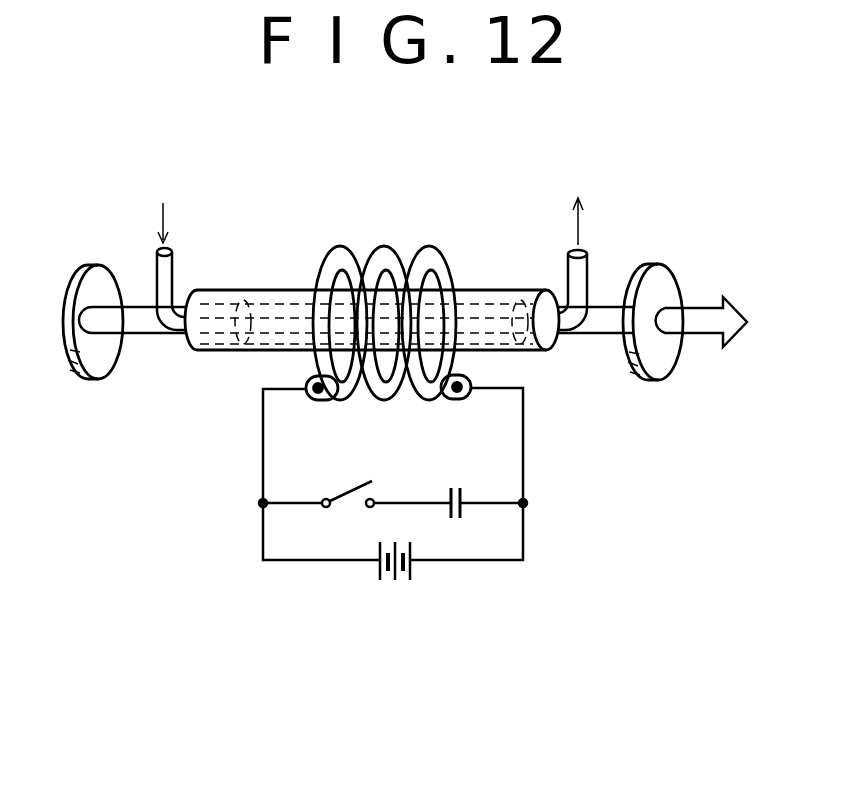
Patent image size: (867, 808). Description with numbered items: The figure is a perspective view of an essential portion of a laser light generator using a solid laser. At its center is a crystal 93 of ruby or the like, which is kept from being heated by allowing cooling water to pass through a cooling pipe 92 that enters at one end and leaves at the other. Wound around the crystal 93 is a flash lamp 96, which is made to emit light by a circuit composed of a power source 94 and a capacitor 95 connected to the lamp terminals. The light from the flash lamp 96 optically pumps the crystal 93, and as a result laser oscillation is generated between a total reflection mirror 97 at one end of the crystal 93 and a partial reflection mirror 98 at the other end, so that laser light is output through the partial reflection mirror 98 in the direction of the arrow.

The cooling pipe 92 is at (173, 268).
The crystal 93 is at (275, 345).
The power source 94 is at (400, 585).
The capacitor 95 is at (455, 486).
The flash lamp 96 is at (390, 247).
The total reflection mirror 97 is at (100, 275).
The partial reflection mirror 98 is at (657, 265).